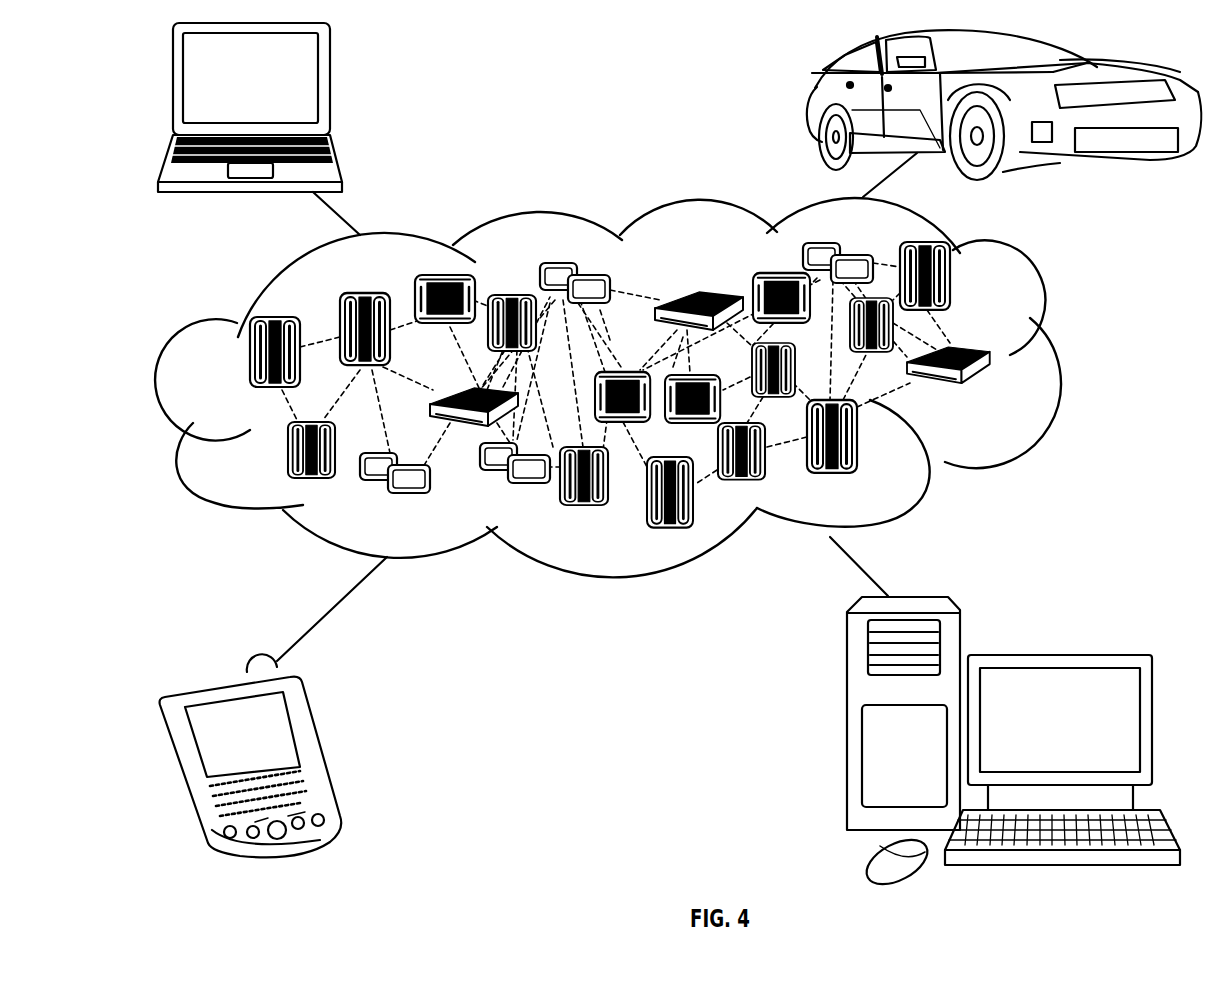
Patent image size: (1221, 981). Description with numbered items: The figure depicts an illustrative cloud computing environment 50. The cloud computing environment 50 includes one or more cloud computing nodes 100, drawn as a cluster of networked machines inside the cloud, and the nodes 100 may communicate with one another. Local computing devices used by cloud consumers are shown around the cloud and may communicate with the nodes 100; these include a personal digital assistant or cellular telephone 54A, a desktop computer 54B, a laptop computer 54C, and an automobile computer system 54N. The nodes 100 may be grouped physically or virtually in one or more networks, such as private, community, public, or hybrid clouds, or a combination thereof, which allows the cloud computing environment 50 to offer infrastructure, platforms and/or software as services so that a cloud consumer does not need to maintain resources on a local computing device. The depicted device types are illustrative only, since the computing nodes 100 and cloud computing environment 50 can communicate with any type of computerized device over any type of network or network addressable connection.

The cloud computing environment 50 is at (1057, 363).
The cloud computing nodes 100 is at (991, 391).
The personal digital assistant or cellular telephone 54A is at (318, 750).
The desktop computer 54B is at (1055, 655).
The laptop computer 54C is at (330, 86).
The automobile computer system 54N is at (815, 100).